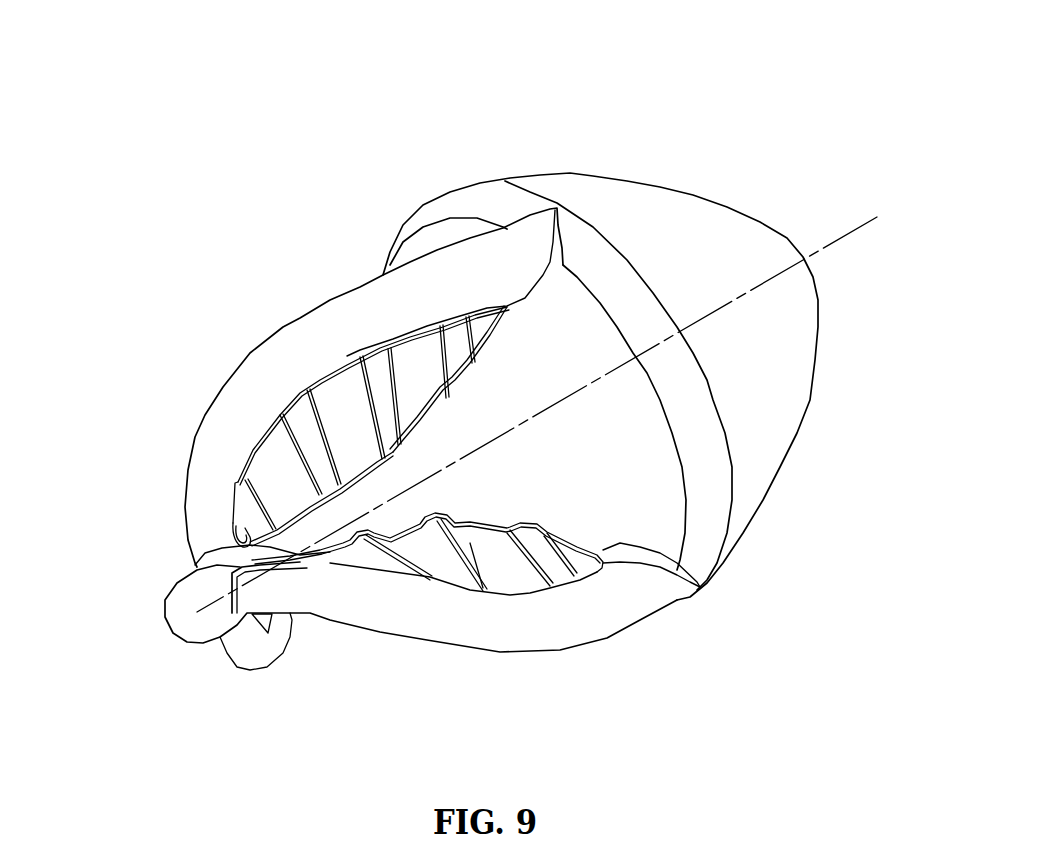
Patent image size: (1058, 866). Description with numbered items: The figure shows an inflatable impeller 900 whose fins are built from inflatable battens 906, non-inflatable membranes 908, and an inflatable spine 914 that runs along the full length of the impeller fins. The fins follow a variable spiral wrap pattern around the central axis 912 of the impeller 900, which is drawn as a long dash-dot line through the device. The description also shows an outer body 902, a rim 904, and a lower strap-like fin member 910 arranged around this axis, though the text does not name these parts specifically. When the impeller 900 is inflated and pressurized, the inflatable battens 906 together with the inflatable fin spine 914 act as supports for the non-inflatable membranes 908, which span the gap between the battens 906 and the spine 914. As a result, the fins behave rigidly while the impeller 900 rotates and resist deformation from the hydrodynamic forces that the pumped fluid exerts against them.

The impeller 900 is at (503, 353).
The shell 902 is at (656, 386).
The rim 904 is at (549, 332).
The inflatable battens 906 is at (316, 421).
The non-inflatable membranes 908 is at (203, 508).
The lower strap 910 is at (371, 615).
The central axis 912 is at (580, 414).
The inflatable spine 914 is at (374, 370).